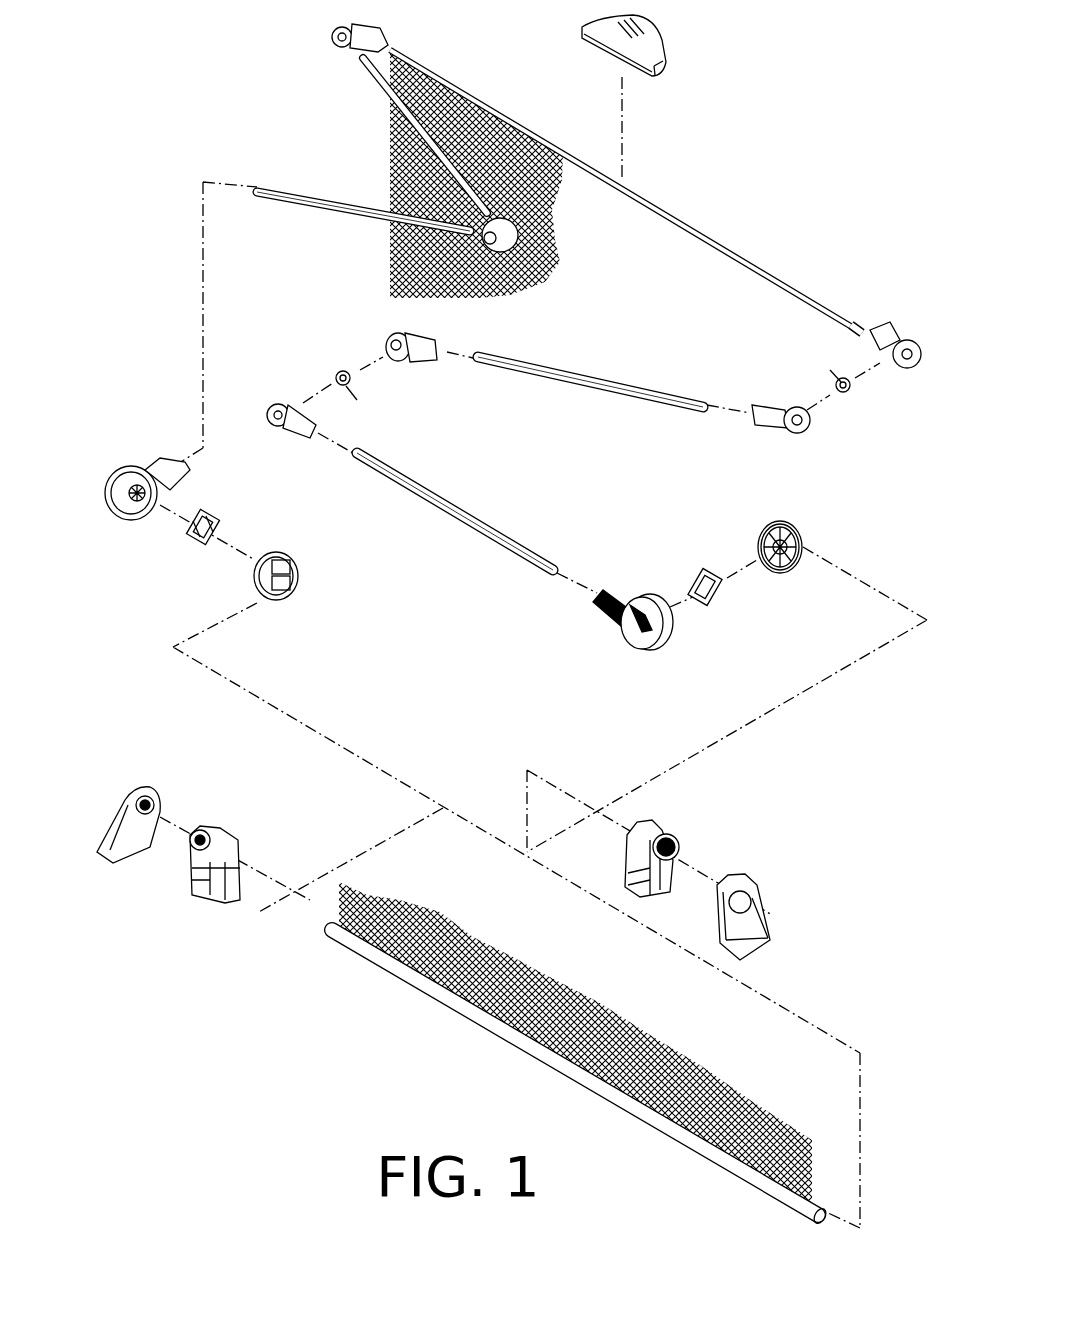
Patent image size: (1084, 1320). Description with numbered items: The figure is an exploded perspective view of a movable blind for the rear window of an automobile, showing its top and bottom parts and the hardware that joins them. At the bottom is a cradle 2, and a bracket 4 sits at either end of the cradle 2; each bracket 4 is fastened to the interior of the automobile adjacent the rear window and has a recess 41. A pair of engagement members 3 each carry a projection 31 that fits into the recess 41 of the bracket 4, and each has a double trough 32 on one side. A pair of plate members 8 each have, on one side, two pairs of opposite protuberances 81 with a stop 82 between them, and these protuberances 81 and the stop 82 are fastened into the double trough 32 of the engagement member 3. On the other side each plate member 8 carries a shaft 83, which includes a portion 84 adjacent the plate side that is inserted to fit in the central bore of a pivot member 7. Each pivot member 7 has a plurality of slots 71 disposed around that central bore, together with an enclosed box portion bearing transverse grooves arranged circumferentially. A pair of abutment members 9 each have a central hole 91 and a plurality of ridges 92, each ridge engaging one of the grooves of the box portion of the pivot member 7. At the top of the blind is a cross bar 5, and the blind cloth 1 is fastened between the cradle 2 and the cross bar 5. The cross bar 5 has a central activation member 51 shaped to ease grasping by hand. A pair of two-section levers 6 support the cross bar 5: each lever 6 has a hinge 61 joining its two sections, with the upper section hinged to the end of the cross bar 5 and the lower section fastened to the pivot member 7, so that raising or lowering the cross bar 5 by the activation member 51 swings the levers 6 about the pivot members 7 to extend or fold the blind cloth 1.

The blind cloth 1 is at (470, 97).
The cradle 2 is at (463, 1008).
The engagement member 3 is at (220, 893).
The projection 31 is at (205, 828).
The double trough 32 is at (200, 873).
The bracket 4 is at (133, 848).
The recess 41 is at (158, 800).
The cross bar 5 is at (763, 260).
The central activation member 51 is at (667, 42).
The two-section lever 6 is at (372, 83).
The hinge 61 is at (507, 237).
The pivot member 7 is at (125, 467).
The slots 71 is at (158, 497).
The plate member 8 is at (283, 552).
The protuberances 81 is at (303, 567).
The stop 82 is at (297, 577).
The shaft 83 is at (757, 538).
The portion 84 is at (783, 573).
The abutment member 9 is at (218, 517).
The central hole 91 is at (208, 550).
The ridges 92 is at (187, 537).